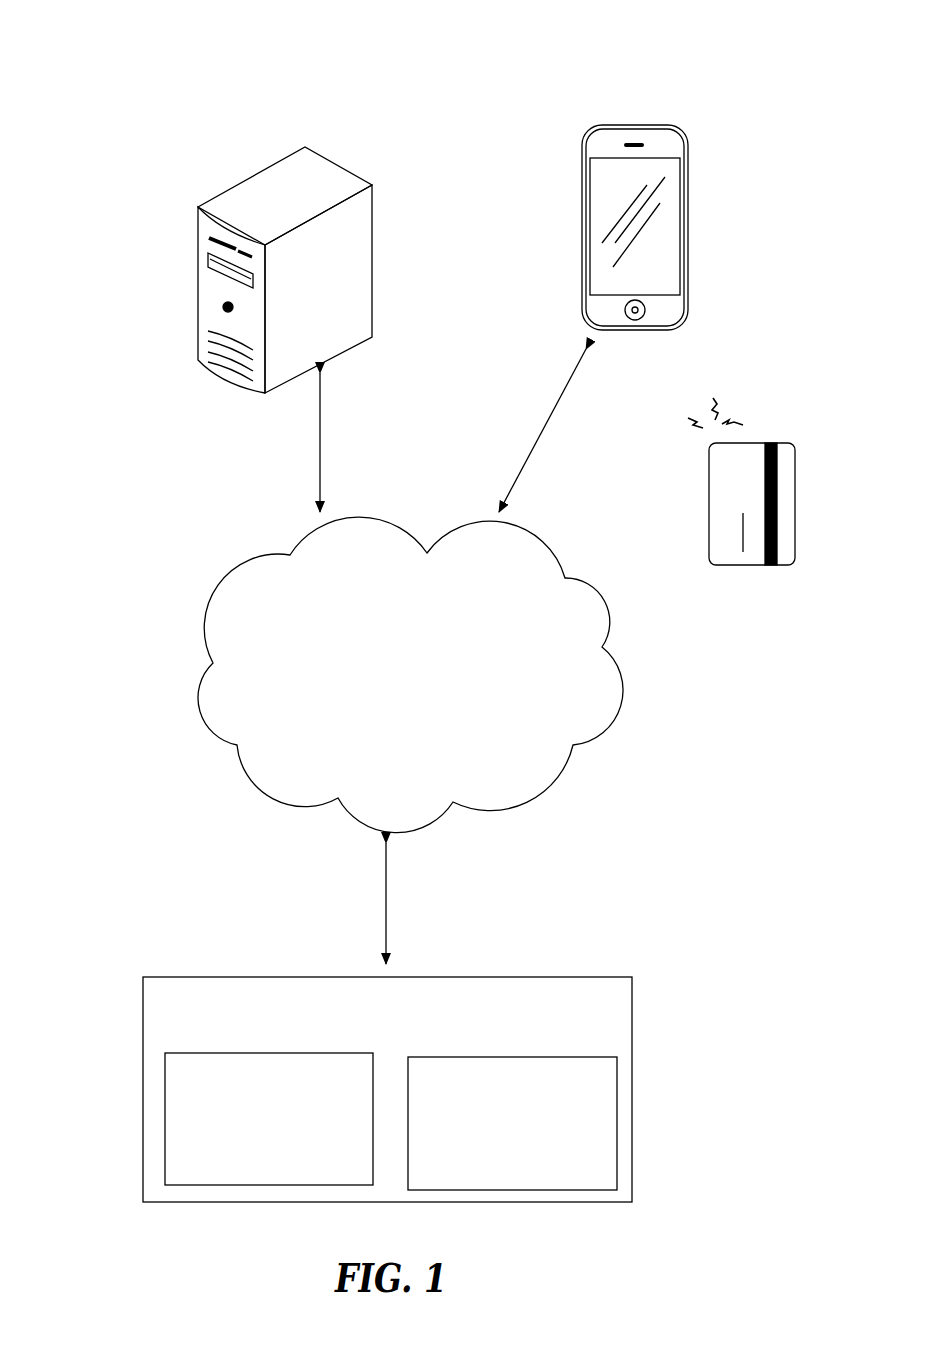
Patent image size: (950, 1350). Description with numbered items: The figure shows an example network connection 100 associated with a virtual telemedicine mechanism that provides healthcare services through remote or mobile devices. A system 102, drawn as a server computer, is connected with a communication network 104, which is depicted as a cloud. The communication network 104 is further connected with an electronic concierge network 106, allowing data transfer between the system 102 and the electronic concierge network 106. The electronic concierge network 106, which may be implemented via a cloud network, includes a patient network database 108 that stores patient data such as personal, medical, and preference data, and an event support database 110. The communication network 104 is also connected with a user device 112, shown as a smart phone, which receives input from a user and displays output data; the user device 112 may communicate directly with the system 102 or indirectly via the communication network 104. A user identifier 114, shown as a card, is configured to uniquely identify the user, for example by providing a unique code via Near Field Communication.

The network connection 100 is at (100, 72).
The system 102 is at (307, 172).
The communication network 104 is at (502, 703).
The electronic concierge network 106 is at (366, 1043).
The patient network database 108 is at (362, 1163).
The event support database 110 is at (608, 1163).
The user device 112 is at (652, 152).
The user identifier 114 is at (747, 452).